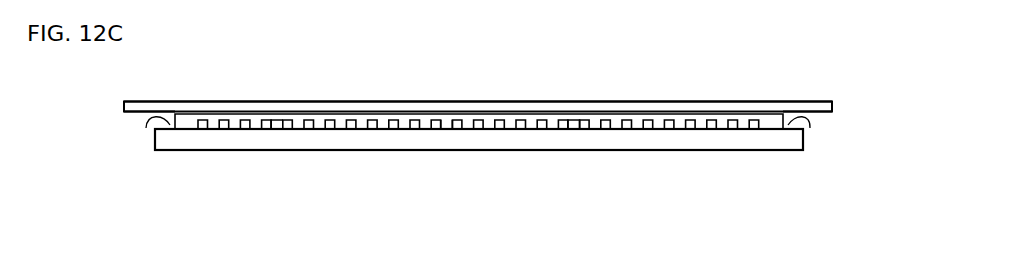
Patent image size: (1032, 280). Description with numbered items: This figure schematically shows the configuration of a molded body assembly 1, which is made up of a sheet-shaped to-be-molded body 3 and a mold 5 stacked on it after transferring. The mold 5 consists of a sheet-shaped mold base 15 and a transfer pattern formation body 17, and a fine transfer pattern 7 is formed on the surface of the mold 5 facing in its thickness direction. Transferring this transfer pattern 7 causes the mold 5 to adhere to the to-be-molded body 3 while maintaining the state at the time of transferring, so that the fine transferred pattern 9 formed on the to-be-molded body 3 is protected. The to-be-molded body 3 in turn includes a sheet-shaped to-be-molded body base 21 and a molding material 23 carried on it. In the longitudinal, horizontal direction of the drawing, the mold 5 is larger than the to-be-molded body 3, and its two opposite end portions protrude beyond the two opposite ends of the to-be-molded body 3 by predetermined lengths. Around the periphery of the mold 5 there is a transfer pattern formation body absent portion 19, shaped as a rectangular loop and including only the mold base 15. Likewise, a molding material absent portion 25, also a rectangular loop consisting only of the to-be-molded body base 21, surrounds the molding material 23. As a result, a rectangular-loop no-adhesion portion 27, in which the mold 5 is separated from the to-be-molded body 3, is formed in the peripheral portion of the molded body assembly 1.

The molded body assembly 1 is at (583, 95).
The to-be-molded body 3 is at (623, 155).
The mold 5 is at (740, 95).
The transfer pattern 7 is at (570, 130).
The transferred pattern 9 is at (527, 120).
The mold base 15 is at (413, 101).
The transfer pattern formation body 17 is at (445, 130).
The transfer pattern formation body absent portion 19 is at (147, 113).
The to-be-molded body base 21 is at (362, 151).
The molding material 23 is at (270, 128).
The molding material absent portion 25 is at (146, 128).
The no-adhesion portion 27 is at (474, 181).